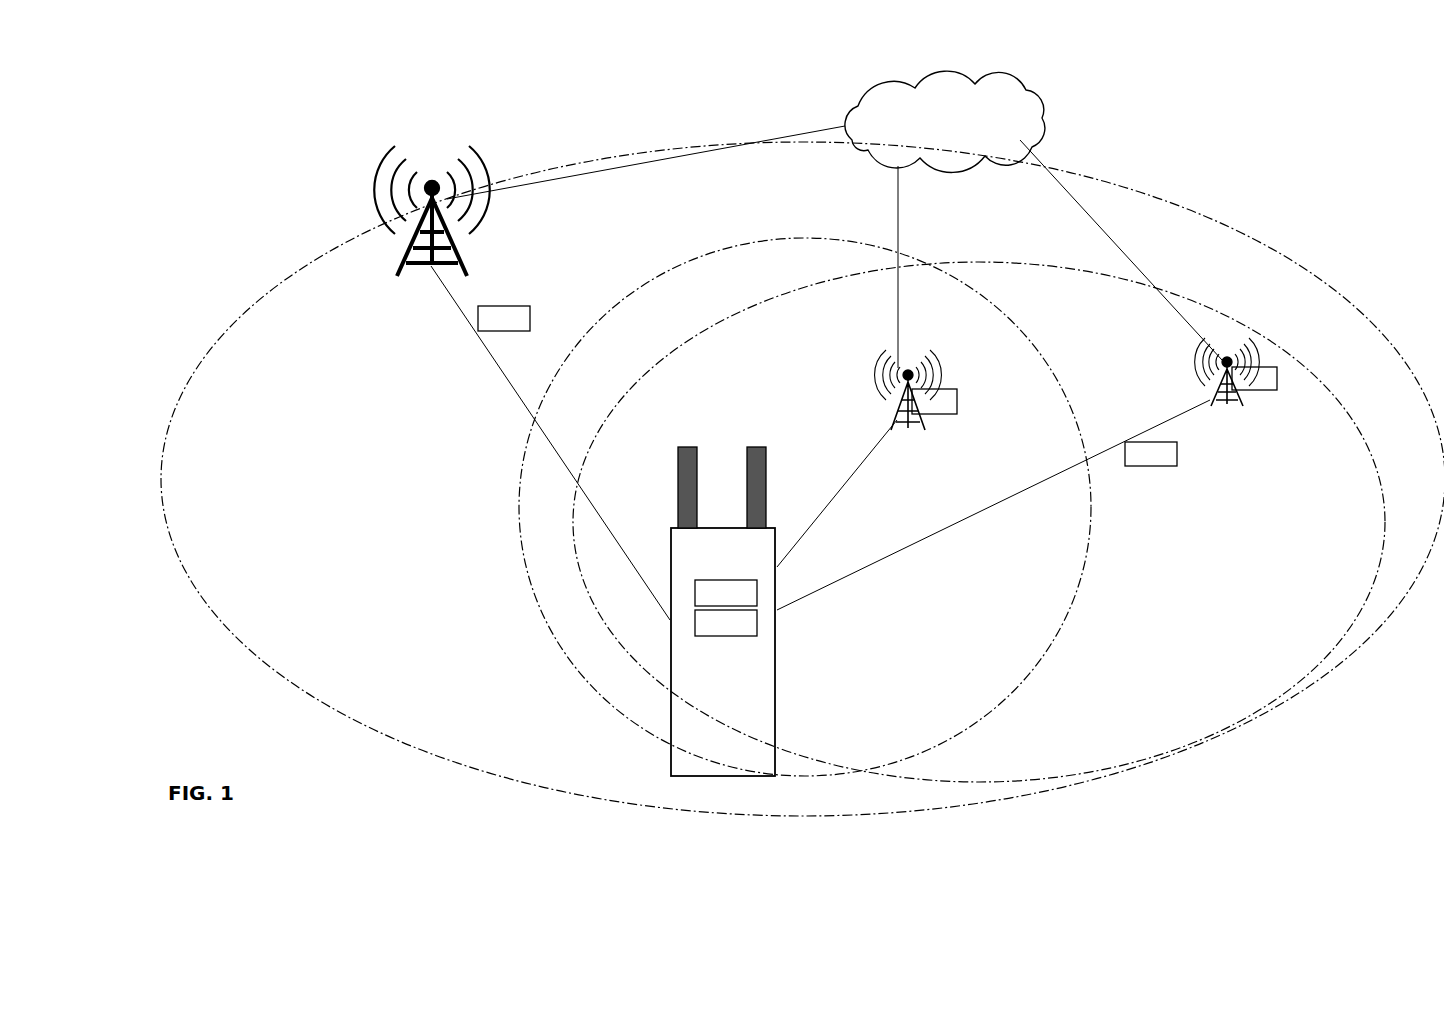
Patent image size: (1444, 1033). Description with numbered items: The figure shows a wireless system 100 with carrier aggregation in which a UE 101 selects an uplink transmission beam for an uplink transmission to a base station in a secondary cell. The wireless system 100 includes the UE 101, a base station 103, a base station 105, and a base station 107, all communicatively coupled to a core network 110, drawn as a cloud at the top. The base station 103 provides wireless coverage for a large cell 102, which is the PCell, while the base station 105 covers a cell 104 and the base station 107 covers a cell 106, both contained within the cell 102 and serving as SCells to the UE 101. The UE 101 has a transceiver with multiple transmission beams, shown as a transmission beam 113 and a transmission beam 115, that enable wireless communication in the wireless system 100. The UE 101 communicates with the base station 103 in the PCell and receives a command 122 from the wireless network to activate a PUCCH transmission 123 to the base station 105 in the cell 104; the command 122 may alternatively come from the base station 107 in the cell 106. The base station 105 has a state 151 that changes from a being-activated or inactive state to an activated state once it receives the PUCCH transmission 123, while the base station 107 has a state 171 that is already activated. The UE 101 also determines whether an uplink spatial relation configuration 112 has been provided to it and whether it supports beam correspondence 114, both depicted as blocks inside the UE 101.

The wireless system 100 is at (307, 157).
The UE 101 is at (723, 583).
The cell 102 is at (185, 392).
The base station 103 is at (413, 258).
The cell 104 is at (523, 474).
The base station 105 is at (909, 368).
The cell 106 is at (1292, 362).
The base station 107 is at (1227, 356).
The core network 110 is at (945, 121).
The uplink spatial relation configuration 112 is at (726, 593).
The transmission beam 113 is at (667, 470).
The beam correspondence 114 is at (726, 623).
The transmission beam 115 is at (778, 459).
The command 122 is at (820, 443).
The PUCCH transmission 123 is at (945, 492).
The state 151 is at (934, 402).
The state 171 is at (1254, 379).